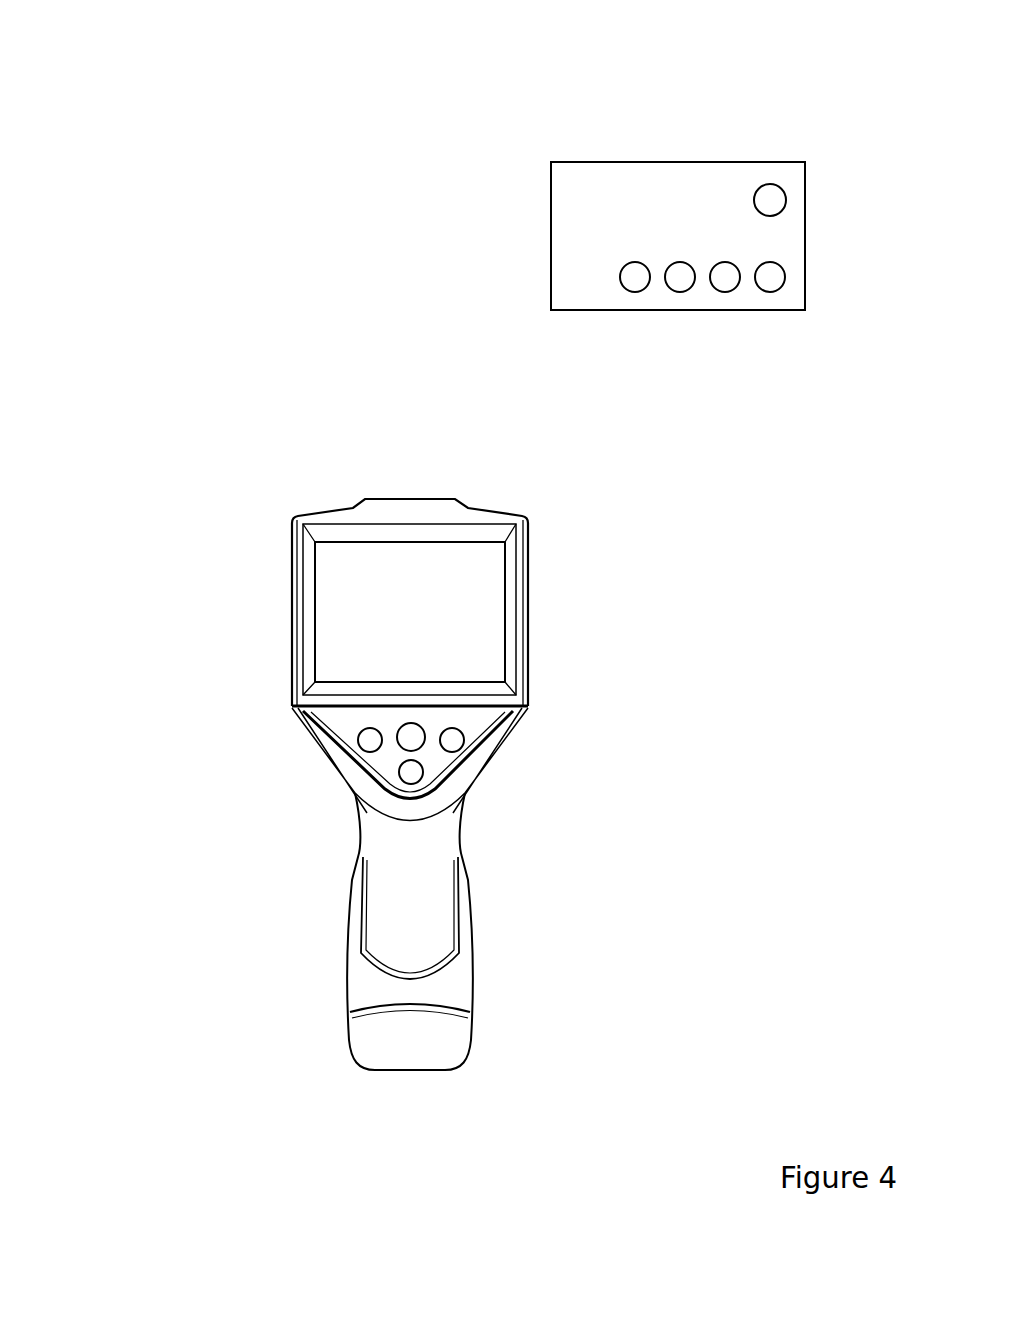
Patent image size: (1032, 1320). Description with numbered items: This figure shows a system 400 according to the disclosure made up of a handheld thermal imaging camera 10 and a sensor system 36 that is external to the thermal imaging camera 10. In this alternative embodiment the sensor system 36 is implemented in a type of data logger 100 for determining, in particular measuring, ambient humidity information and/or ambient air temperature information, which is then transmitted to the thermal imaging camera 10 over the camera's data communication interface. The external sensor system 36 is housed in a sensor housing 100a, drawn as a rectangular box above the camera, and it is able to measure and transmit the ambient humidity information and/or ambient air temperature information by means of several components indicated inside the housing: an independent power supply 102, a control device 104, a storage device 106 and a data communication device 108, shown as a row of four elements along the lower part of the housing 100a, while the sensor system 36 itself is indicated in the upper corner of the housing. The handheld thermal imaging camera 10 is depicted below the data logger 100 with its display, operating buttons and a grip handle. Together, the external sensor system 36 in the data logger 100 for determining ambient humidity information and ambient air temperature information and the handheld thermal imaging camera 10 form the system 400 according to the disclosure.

The system 400 is at (160, 128).
The data logger 100 is at (487, 160).
The sensor housing 100a is at (617, 185).
The sensor system 36 is at (762, 195).
The independent power supply 102 is at (628, 272).
The control device 104 is at (681, 280).
The storage device 106 is at (725, 280).
The data communication device 108 is at (777, 281).
The thermal imaging camera 10 is at (250, 687).